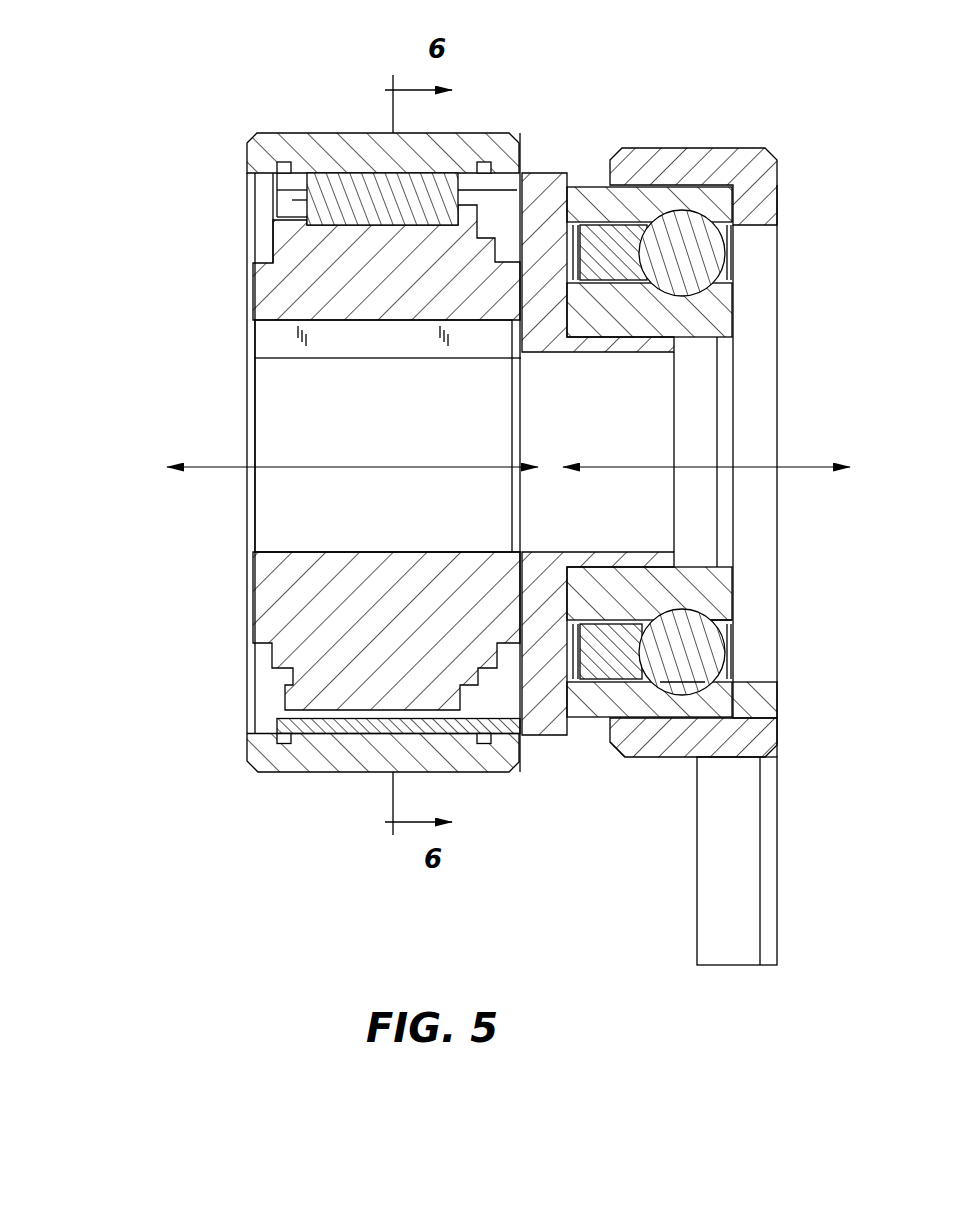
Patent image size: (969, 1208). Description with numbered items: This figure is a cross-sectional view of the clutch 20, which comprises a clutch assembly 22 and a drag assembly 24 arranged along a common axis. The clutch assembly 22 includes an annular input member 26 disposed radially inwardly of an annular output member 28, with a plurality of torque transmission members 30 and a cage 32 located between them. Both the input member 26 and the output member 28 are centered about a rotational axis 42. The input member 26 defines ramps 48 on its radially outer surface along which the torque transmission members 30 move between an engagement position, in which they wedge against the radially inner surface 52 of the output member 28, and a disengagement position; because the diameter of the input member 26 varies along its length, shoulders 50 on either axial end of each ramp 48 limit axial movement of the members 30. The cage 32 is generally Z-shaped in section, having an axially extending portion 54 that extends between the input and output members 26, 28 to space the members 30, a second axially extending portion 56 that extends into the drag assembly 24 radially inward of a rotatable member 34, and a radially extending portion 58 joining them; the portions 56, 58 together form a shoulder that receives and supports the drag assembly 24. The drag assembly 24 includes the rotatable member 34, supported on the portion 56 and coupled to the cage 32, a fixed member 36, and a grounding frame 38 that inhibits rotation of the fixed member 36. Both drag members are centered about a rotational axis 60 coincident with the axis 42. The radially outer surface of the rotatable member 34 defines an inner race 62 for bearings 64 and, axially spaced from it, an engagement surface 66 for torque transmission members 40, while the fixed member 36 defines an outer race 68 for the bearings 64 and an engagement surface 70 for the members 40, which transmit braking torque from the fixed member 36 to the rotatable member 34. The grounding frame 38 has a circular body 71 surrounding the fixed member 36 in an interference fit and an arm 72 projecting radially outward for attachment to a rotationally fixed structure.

The clutch 20 is at (147, 232).
The clutch assembly 22 is at (222, 122).
The drag assembly 24 is at (770, 105).
The input member 26 is at (272, 604).
The output member 28 is at (262, 745).
The torque transmission members 30 is at (318, 200).
The cage 32 is at (550, 193).
The rotatable member 34 is at (722, 307).
The fixed member 36 is at (723, 203).
The grounding frame 38 is at (755, 718).
The torque transmission members 40 is at (615, 257).
The rotational axis 42 is at (228, 468).
The ramps 48 is at (355, 223).
The shoulders 50 is at (305, 220).
The radially inner surface 52 is at (350, 175).
The axially extending portion 54 is at (430, 723).
The axially extending portion 56 is at (628, 565).
The radially extending portion 58 is at (527, 575).
The rotational axis 60 is at (800, 468).
The inner race 62 is at (700, 606).
The bearings 64 is at (707, 648).
The engagement surface 66 is at (610, 650).
The outer race 68 is at (692, 695).
The engagement surface 70 is at (610, 682).
The body 71 is at (712, 740).
The arm 72 is at (760, 888).